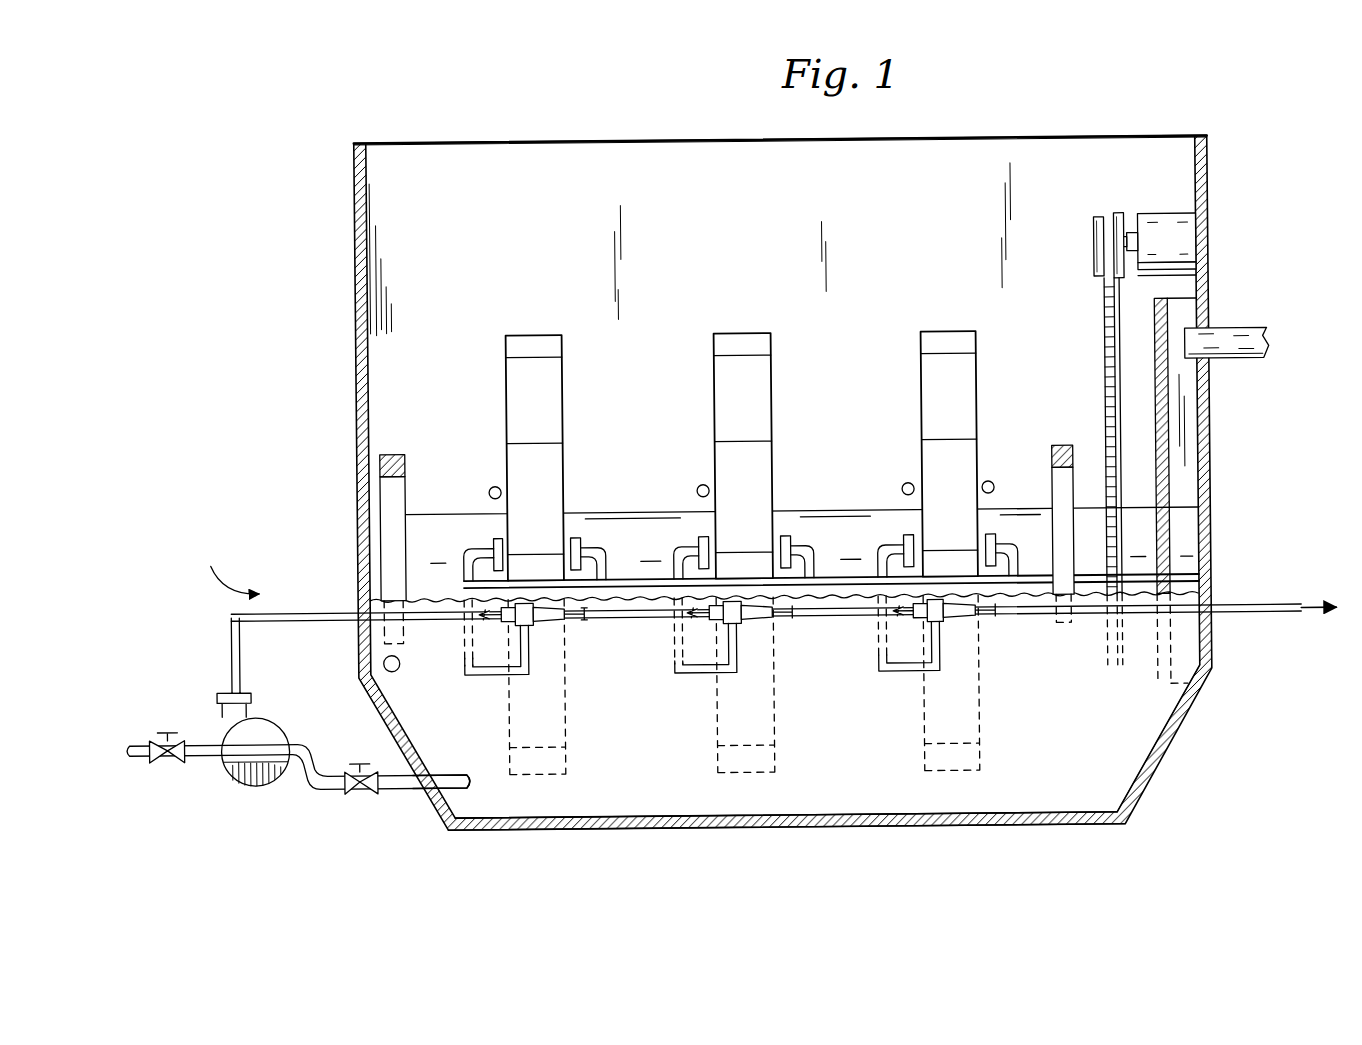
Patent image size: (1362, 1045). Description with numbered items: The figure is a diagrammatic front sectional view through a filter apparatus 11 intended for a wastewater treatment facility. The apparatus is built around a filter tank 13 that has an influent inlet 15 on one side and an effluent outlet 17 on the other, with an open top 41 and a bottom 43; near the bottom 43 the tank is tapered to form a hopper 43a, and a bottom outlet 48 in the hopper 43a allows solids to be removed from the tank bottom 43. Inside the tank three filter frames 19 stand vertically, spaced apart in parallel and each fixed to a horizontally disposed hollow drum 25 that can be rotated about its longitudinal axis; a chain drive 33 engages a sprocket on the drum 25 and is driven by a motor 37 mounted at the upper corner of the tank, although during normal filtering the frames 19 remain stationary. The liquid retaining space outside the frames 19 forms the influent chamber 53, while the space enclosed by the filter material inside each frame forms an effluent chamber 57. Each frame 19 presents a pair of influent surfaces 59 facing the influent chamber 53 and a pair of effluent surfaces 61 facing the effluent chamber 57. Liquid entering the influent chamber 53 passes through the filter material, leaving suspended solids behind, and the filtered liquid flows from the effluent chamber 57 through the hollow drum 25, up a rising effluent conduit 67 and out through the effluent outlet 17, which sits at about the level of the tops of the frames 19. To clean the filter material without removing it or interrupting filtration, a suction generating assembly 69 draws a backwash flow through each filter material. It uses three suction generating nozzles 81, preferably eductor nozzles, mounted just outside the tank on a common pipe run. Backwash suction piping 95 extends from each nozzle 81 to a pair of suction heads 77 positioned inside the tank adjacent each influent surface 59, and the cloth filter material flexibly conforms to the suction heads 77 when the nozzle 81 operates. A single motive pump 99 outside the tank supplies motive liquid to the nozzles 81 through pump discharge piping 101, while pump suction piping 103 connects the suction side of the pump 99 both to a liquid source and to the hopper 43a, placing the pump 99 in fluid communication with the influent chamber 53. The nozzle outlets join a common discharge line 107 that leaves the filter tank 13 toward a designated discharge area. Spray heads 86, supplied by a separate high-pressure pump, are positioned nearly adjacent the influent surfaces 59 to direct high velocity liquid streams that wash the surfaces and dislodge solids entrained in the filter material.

The filter apparatus 11 is at (1240, 100).
The filter tank 13 is at (538, 126).
The influent inlet 15 is at (382, 660).
The effluent outlet 17 is at (1251, 338).
The filter frame 19 is at (548, 333).
The hollow drum 25 is at (645, 510).
The chain drive 33 is at (1106, 304).
The motor 37 is at (1184, 241).
The open top 41 is at (1077, 139).
The bottom 43 is at (819, 829).
The hopper 43a is at (650, 806).
The bottom outlet 48 is at (437, 787).
The influent chamber 53 is at (1043, 728).
The effluent chamber 57 is at (546, 500).
The influent surface 59 is at (507, 367).
The effluent surface 61 is at (545, 436).
The rising effluent conduit 67 is at (1187, 443).
The suction generating assembly 69 is at (229, 568).
The suction head 77 is at (491, 546).
The suction generating nozzle 81 is at (545, 624).
The spray head 86 is at (489, 489).
The backwash suction piping 95 is at (490, 681).
The motive pump 99 is at (279, 728).
The pump discharge piping 101 is at (320, 612).
The pump suction piping 103 is at (138, 762).
The common discharge line 107 is at (590, 624).